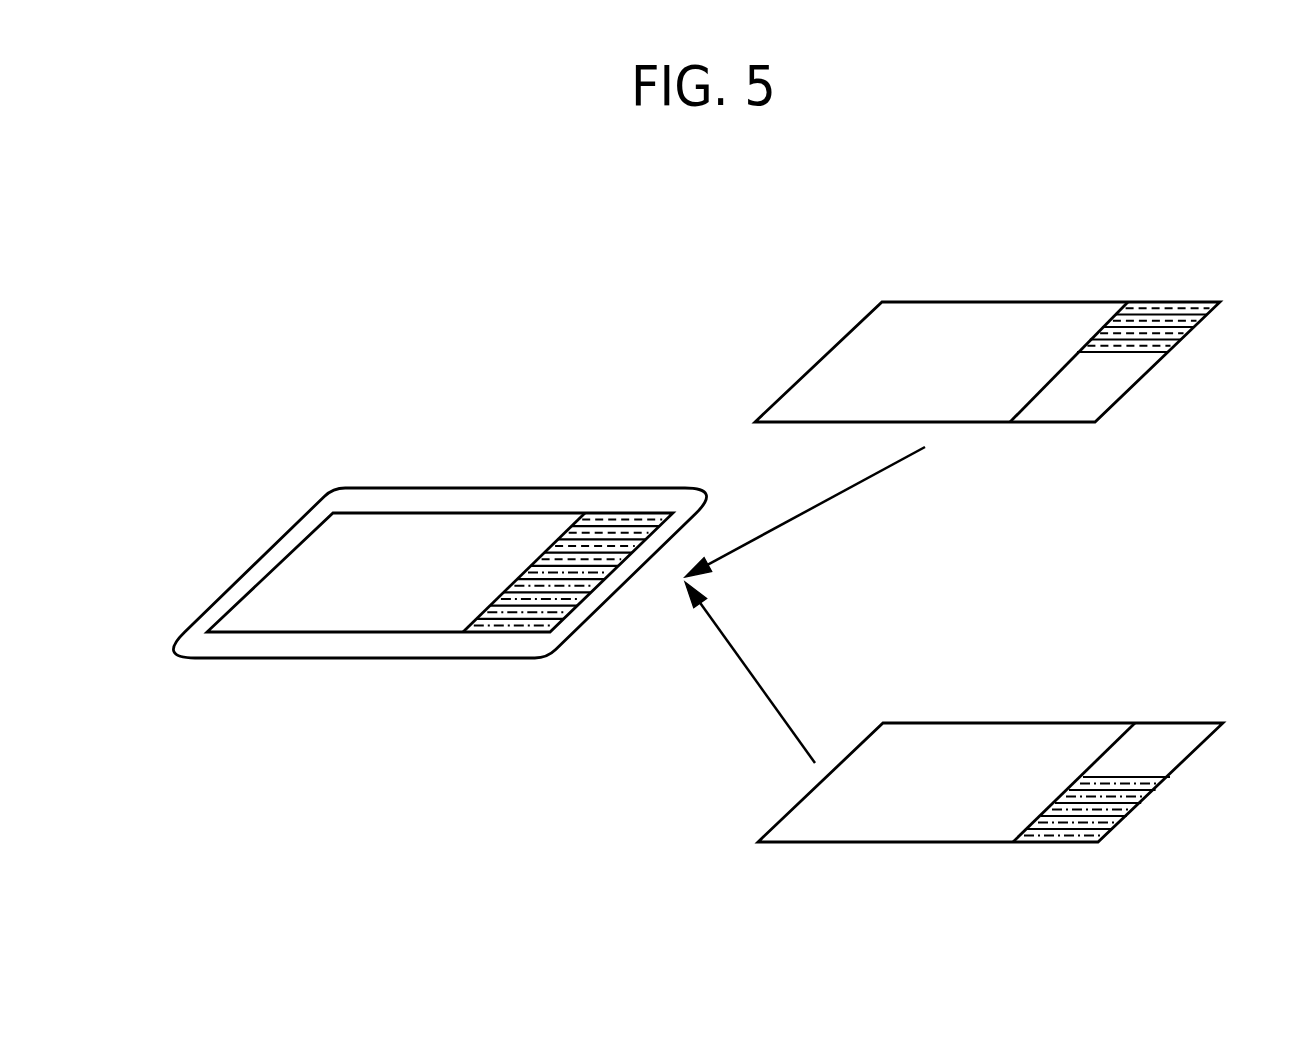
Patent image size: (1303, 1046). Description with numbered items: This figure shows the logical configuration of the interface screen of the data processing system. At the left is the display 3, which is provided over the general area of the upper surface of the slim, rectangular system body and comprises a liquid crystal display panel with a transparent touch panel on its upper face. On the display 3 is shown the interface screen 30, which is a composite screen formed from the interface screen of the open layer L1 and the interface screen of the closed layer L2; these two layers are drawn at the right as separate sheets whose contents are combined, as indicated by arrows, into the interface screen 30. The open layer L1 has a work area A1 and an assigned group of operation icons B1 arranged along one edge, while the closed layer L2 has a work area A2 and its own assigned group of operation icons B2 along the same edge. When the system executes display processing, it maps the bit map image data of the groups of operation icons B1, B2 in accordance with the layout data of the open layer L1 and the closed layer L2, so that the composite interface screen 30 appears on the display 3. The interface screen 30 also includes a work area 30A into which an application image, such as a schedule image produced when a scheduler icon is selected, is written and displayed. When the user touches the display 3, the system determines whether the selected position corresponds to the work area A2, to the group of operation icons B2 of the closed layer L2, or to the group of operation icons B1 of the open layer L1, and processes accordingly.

The display 3 is at (439, 534).
The interface screen 30 is at (303, 538).
The work area 30A is at (458, 527).
The open layer L1 is at (1015, 316).
The work area A1 is at (995, 315).
The group of operation icons B1 is at (1205, 312).
The closed layer L2 is at (990, 740).
The work area A2 is at (985, 737).
The group of operation icons B2 is at (1150, 790).